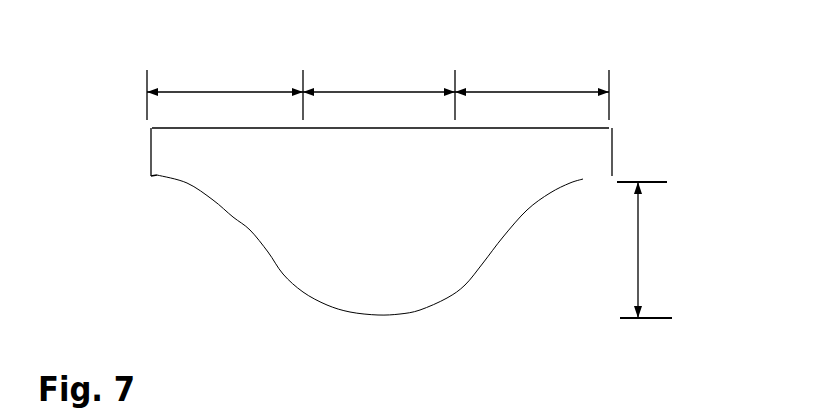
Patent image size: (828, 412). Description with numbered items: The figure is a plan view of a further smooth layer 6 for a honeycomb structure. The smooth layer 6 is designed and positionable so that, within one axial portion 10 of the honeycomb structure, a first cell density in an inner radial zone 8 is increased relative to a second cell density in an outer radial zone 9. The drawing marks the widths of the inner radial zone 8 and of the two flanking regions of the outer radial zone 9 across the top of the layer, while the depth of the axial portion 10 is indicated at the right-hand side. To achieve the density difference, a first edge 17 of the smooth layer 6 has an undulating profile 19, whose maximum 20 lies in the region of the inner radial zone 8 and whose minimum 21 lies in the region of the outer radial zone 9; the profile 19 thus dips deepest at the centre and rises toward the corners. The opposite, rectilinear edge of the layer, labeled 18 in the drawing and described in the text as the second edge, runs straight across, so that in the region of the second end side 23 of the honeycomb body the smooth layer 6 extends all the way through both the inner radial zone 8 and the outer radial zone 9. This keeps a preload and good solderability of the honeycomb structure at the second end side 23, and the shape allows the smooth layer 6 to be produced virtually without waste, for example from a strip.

The smooth layer 6 is at (160, 153).
The inner radial zone 8 is at (347, 92).
The outer radial zone 9 is at (204, 92).
The axial portion 10 is at (638, 235).
The first edge 17 is at (465, 286).
The upper edge of side wall 18 is at (612, 128).
The undulating profile 19 is at (270, 256).
The maximum 20 is at (380, 317).
The minimum 21 is at (152, 178).
The second end side 23 is at (151, 128).